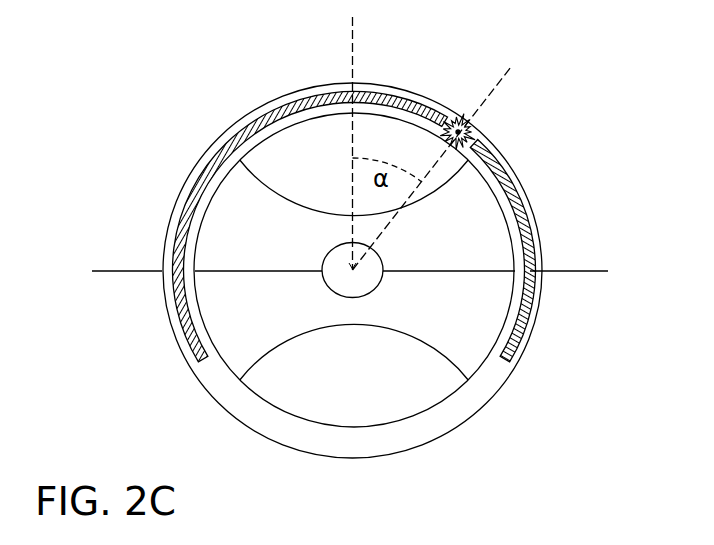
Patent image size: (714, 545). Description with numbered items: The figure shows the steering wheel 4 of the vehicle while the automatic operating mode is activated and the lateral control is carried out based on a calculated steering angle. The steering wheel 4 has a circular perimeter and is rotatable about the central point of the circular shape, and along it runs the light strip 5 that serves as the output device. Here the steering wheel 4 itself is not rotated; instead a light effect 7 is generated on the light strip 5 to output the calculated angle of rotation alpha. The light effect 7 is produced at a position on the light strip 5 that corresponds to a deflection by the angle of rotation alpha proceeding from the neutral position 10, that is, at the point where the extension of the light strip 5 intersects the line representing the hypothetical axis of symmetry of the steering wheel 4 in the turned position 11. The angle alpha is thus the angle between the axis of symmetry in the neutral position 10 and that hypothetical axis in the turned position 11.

The steering wheel 4 is at (162, 271).
The light strip 5 is at (530, 271).
The light effect 7 is at (463, 132).
The neutral position 10 is at (344, 54).
The turned position 11 is at (508, 82).